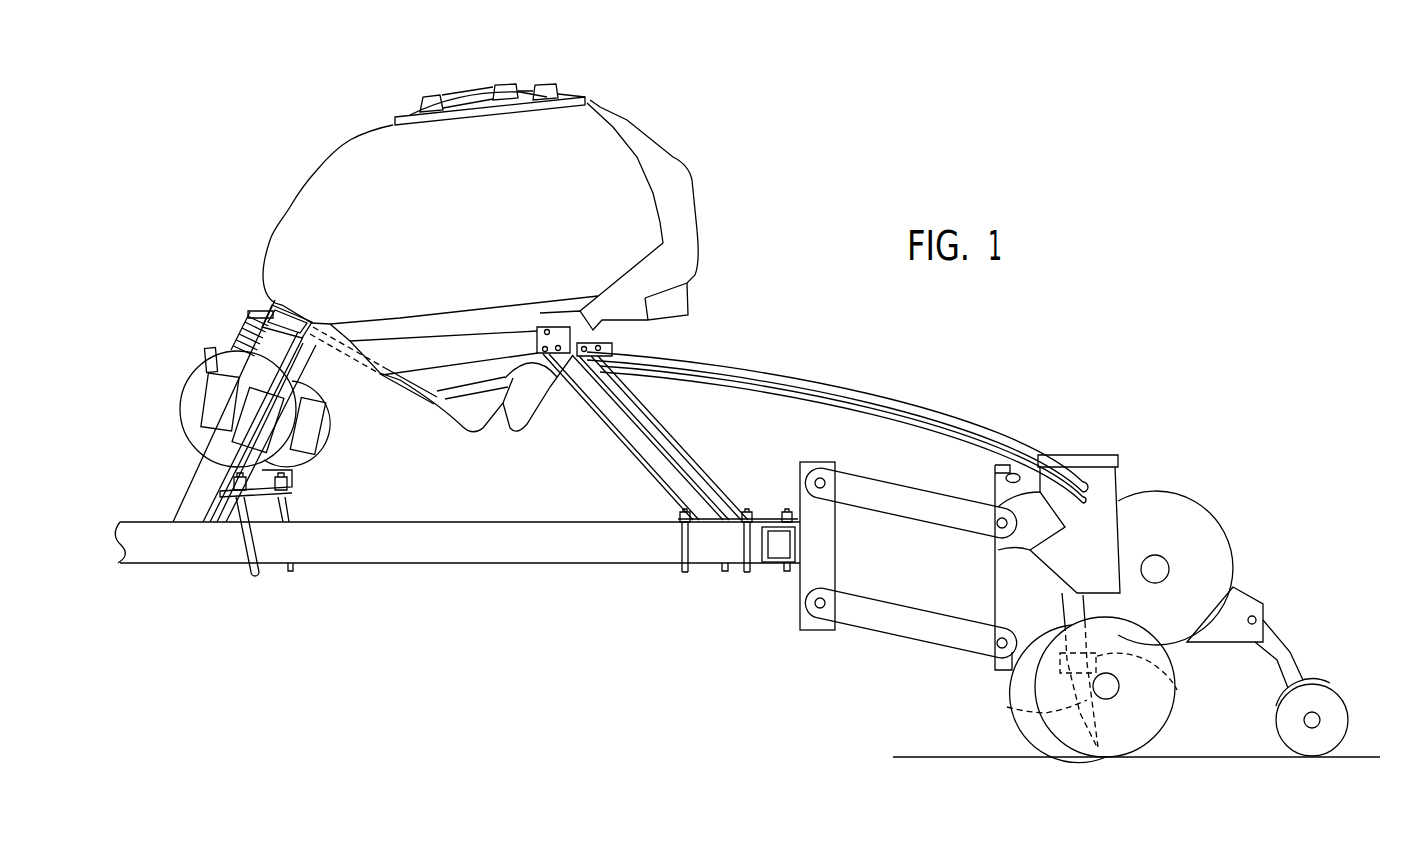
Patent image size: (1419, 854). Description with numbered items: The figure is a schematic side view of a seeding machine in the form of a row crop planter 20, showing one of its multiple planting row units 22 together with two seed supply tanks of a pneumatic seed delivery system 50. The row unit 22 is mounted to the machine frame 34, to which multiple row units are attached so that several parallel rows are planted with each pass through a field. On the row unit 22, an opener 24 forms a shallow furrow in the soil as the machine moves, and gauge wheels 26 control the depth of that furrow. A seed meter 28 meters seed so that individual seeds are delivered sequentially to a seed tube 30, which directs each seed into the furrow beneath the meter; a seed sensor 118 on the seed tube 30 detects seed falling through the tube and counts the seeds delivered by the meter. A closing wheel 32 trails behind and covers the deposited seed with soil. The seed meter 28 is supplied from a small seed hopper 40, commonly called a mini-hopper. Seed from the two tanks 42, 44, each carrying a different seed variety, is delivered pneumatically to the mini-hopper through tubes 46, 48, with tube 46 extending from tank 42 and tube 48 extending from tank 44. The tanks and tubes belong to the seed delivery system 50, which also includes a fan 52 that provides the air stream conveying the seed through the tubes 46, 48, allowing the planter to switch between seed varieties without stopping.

The row crop planter 20 is at (628, 612).
The row unit 22 is at (1185, 453).
The opener 24 is at (1018, 732).
The gauge wheels 26 is at (1167, 730).
The seed meter 28 is at (1226, 538).
The seed tube 30 is at (1007, 707).
The closing wheel 32 is at (1350, 733).
The machine frame 34 is at (410, 565).
The seed hopper 40 is at (1117, 480).
The tank 42 is at (613, 122).
The tank 44 is at (684, 158).
The tube 46 is at (840, 408).
The tube 48 is at (958, 418).
The pneumatic seed delivery system 50 is at (447, 452).
The fan 52 is at (180, 397).
The seed sensor 118 is at (1177, 690).